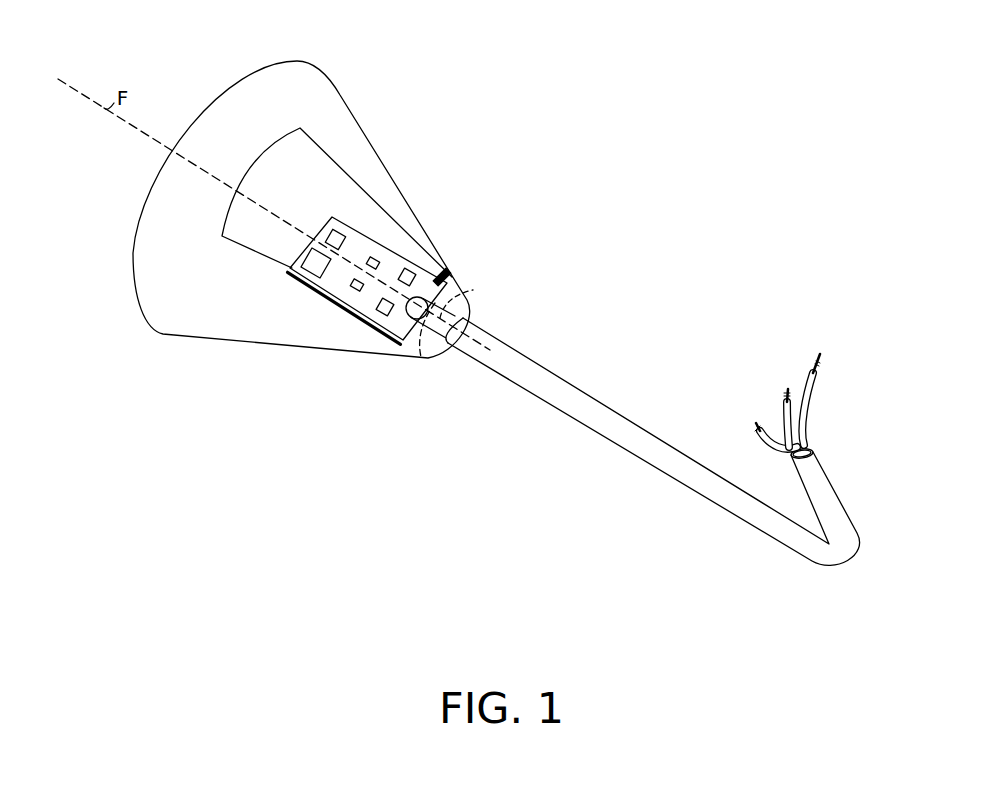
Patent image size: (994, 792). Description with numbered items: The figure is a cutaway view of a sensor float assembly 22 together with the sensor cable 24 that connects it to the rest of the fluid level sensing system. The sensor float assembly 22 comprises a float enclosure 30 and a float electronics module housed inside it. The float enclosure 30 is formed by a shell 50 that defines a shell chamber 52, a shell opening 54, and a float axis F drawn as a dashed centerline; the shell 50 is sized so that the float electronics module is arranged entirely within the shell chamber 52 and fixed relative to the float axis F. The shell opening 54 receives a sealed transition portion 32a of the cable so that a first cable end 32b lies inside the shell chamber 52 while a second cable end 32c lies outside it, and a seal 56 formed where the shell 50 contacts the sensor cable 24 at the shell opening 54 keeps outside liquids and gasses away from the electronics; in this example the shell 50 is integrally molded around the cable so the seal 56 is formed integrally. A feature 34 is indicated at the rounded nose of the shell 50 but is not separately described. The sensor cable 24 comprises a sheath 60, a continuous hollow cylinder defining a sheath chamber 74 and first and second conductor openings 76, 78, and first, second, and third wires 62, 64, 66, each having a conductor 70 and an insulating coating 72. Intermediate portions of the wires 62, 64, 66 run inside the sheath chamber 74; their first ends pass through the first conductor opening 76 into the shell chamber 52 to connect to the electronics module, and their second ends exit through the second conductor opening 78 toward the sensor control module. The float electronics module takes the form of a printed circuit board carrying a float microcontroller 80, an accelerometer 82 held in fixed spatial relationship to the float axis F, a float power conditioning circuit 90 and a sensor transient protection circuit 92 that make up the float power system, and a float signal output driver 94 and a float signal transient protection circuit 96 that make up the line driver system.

The sensor float assembly 22 is at (618, 253).
The sensor cable 24 is at (665, 476).
The float enclosure 30 is at (372, 146).
The first end of cable 32a is at (460, 314).
The connector end 32b is at (423, 297).
The second end of cable 32c is at (820, 423).
The nose of housing 34 is at (432, 280).
The shell 50 is at (307, 80).
The shell chamber 52 is at (302, 219).
The shell opening 54 is at (464, 316).
The seal 56 is at (422, 360).
The sheath 60 is at (532, 375).
The first wire 62 is at (762, 448).
The second wire 64 is at (783, 407).
The third wire 66 is at (815, 372).
The conductor 70 is at (821, 357).
The insulating coating 72 is at (815, 396).
The sheath chamber 74 is at (815, 453).
The first conductor opening 76 is at (446, 272).
The second conductor opening 78 is at (814, 442).
The float microcontroller 80 is at (314, 266).
The accelerometer 82 is at (336, 231).
The float power conditioning circuit 90 is at (354, 288).
The sensor transient protection circuit 92 is at (372, 326).
The float signal output driver 94 is at (375, 258).
The float signal transient protection circuit 96 is at (409, 270).